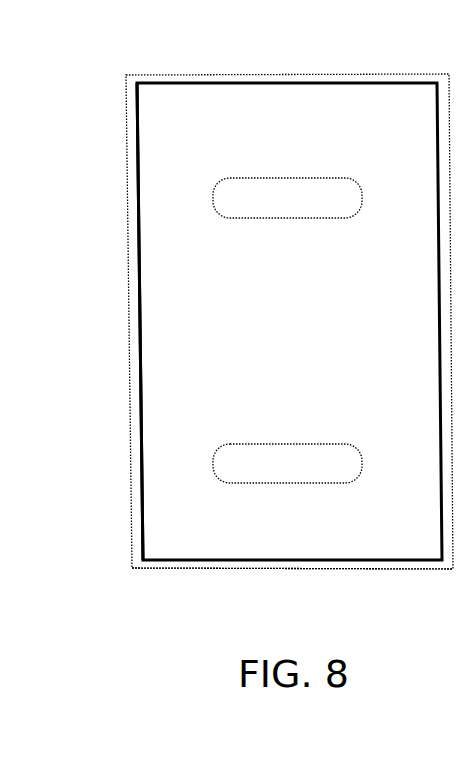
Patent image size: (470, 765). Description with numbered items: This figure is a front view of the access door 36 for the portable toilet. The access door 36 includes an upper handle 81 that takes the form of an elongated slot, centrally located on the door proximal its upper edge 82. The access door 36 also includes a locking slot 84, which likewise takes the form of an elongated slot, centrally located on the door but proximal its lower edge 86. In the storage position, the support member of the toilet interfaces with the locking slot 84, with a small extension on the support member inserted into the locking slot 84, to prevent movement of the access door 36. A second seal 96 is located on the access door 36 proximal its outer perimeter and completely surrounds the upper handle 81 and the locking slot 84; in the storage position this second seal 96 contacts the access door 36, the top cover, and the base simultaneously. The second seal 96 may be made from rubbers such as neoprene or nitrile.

The upper edge 82 is at (201, 75).
The access door 36 is at (155, 140).
The upper handle 81 is at (222, 189).
The locking slot 84 is at (230, 461).
The second seal 96 is at (143, 557).
The lower edge 86 is at (262, 567).